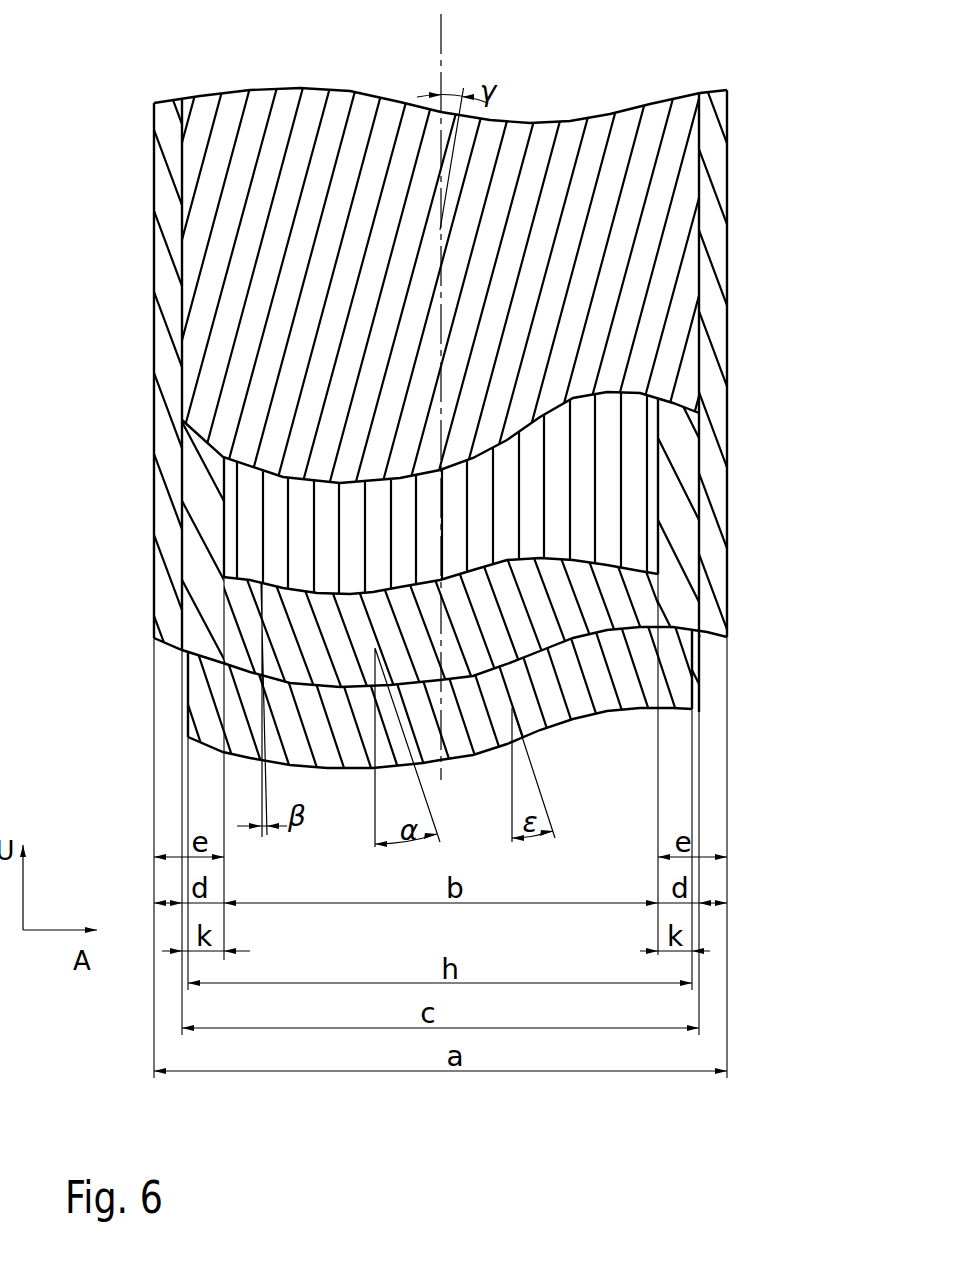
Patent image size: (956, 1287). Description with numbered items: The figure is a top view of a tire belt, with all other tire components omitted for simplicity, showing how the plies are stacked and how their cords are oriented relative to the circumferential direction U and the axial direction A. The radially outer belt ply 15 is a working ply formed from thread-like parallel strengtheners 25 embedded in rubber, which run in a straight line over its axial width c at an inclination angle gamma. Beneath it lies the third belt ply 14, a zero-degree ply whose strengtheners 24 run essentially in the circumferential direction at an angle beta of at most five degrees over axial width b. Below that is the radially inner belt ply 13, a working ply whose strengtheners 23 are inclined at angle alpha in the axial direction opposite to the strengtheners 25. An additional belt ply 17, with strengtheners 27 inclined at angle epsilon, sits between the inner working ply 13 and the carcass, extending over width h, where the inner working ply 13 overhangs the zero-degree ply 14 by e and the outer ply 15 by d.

The radially inner belt ply 13 is at (708, 313).
The third belt ply 14 is at (628, 526).
The radially outer belt ply 15 is at (666, 278).
The belt ply 17 is at (599, 694).
The strengtheners 23 is at (191, 568).
The strengtheners 24 is at (283, 530).
The strengtheners 25 is at (191, 276).
The strengtheners 27 is at (290, 710).